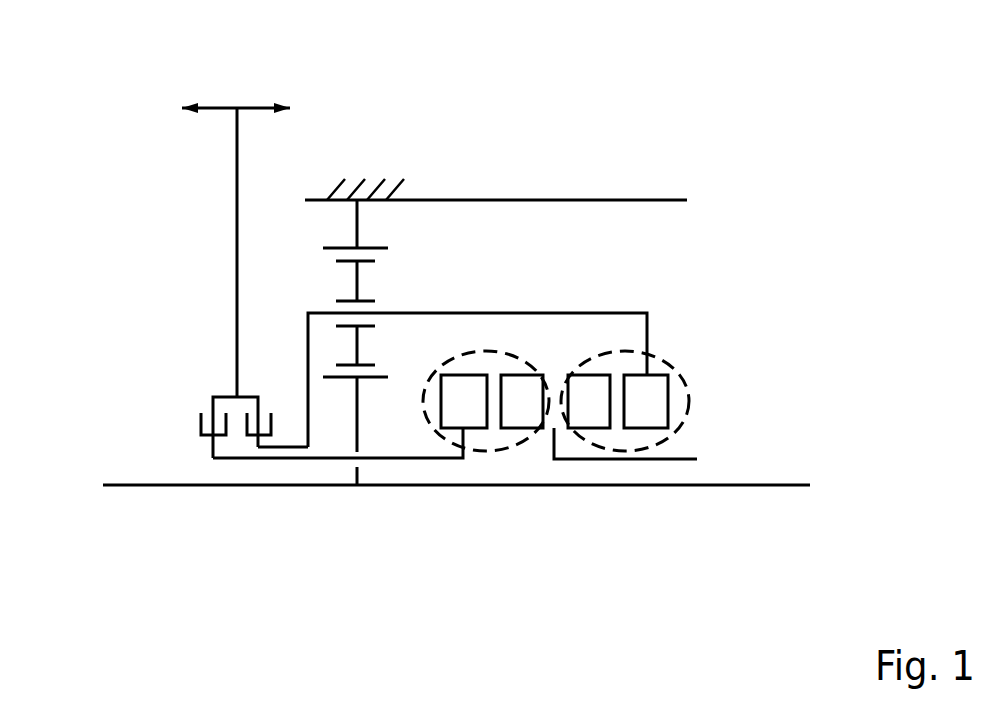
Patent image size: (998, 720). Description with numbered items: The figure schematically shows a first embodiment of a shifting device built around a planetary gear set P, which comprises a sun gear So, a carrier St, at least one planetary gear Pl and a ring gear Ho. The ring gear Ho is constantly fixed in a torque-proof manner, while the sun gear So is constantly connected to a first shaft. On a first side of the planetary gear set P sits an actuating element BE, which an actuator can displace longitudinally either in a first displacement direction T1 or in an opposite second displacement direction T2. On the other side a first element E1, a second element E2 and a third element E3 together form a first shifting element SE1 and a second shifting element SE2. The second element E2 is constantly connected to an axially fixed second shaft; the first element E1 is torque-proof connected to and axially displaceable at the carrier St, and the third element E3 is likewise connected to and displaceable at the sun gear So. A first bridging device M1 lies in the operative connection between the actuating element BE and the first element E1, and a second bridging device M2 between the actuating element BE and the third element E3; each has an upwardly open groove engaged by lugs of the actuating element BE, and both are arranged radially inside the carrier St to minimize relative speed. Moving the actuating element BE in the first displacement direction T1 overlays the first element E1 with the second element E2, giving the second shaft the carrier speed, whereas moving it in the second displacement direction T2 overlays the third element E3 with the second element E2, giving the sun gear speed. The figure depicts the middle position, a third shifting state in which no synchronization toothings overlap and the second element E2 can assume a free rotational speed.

The actuating element BE is at (237, 263).
The first displacement direction T1 is at (209, 85).
The second displacement direction T2 is at (263, 85).
The ring gear Ho is at (370, 248).
The planetary gear Pl is at (358, 283).
The carrier St is at (405, 313).
The sun gear So is at (338, 377).
The planetary gear set P is at (356, 497).
The first bridging device M1 is at (250, 443).
The second bridging device M2 is at (202, 442).
The first element E1 is at (650, 405).
The second element E2 is at (553, 390).
The third element E3 is at (472, 390).
The first shifting element SE1 is at (610, 452).
The second shifting element SE2 is at (499, 452).